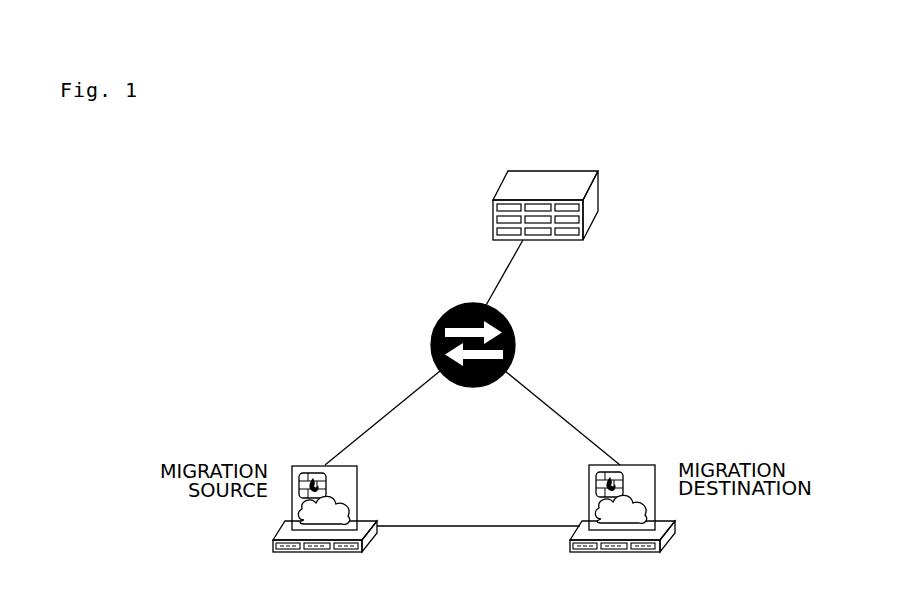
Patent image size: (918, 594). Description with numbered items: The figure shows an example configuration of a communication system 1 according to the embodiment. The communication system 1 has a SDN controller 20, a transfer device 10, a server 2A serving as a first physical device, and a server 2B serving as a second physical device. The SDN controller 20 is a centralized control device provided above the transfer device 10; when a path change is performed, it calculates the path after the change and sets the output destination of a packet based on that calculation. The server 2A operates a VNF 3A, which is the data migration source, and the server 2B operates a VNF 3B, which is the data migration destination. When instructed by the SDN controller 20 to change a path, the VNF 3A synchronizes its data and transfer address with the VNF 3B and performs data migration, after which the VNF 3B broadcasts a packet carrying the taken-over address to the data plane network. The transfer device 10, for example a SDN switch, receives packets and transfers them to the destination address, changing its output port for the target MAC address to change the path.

The communication system 1 is at (370, 276).
The SDN controller 20 is at (600, 196).
The transfer device 10 is at (515, 333).
The server 2A is at (362, 545).
The server 2B is at (660, 545).
The VNF 3A is at (357, 484).
The VNF 3B is at (588, 484).